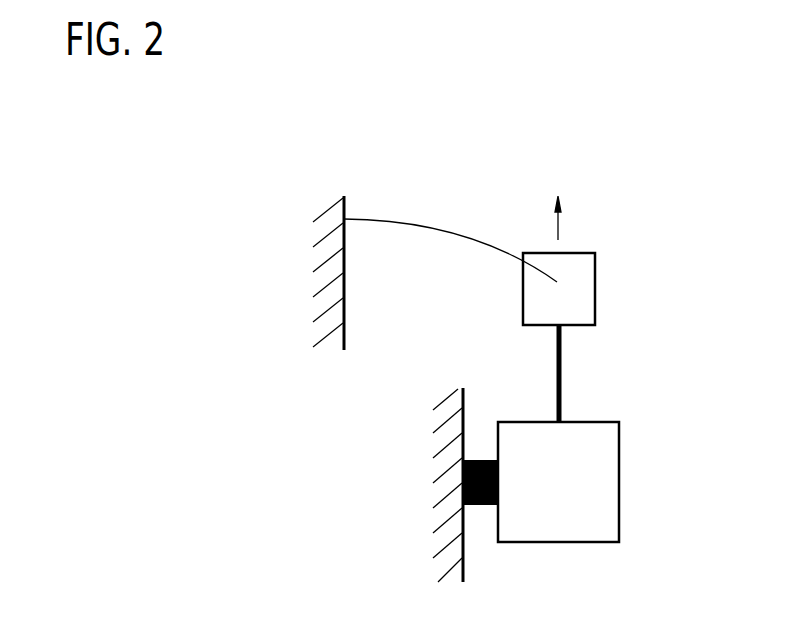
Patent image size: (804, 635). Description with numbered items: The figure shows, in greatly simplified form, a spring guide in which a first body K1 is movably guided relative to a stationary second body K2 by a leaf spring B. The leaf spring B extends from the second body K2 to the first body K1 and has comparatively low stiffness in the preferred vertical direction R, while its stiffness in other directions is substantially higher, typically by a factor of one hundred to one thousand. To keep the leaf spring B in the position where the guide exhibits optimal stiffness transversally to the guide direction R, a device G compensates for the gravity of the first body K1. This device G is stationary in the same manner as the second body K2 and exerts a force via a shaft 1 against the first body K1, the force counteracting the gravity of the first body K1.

The leaf spring B is at (450, 227).
The vertical direction R is at (571, 218).
The first body K1 is at (582, 302).
The shaft 1 is at (560, 387).
The device for compensating for gravity G is at (587, 475).
The second body K2 is at (332, 302).